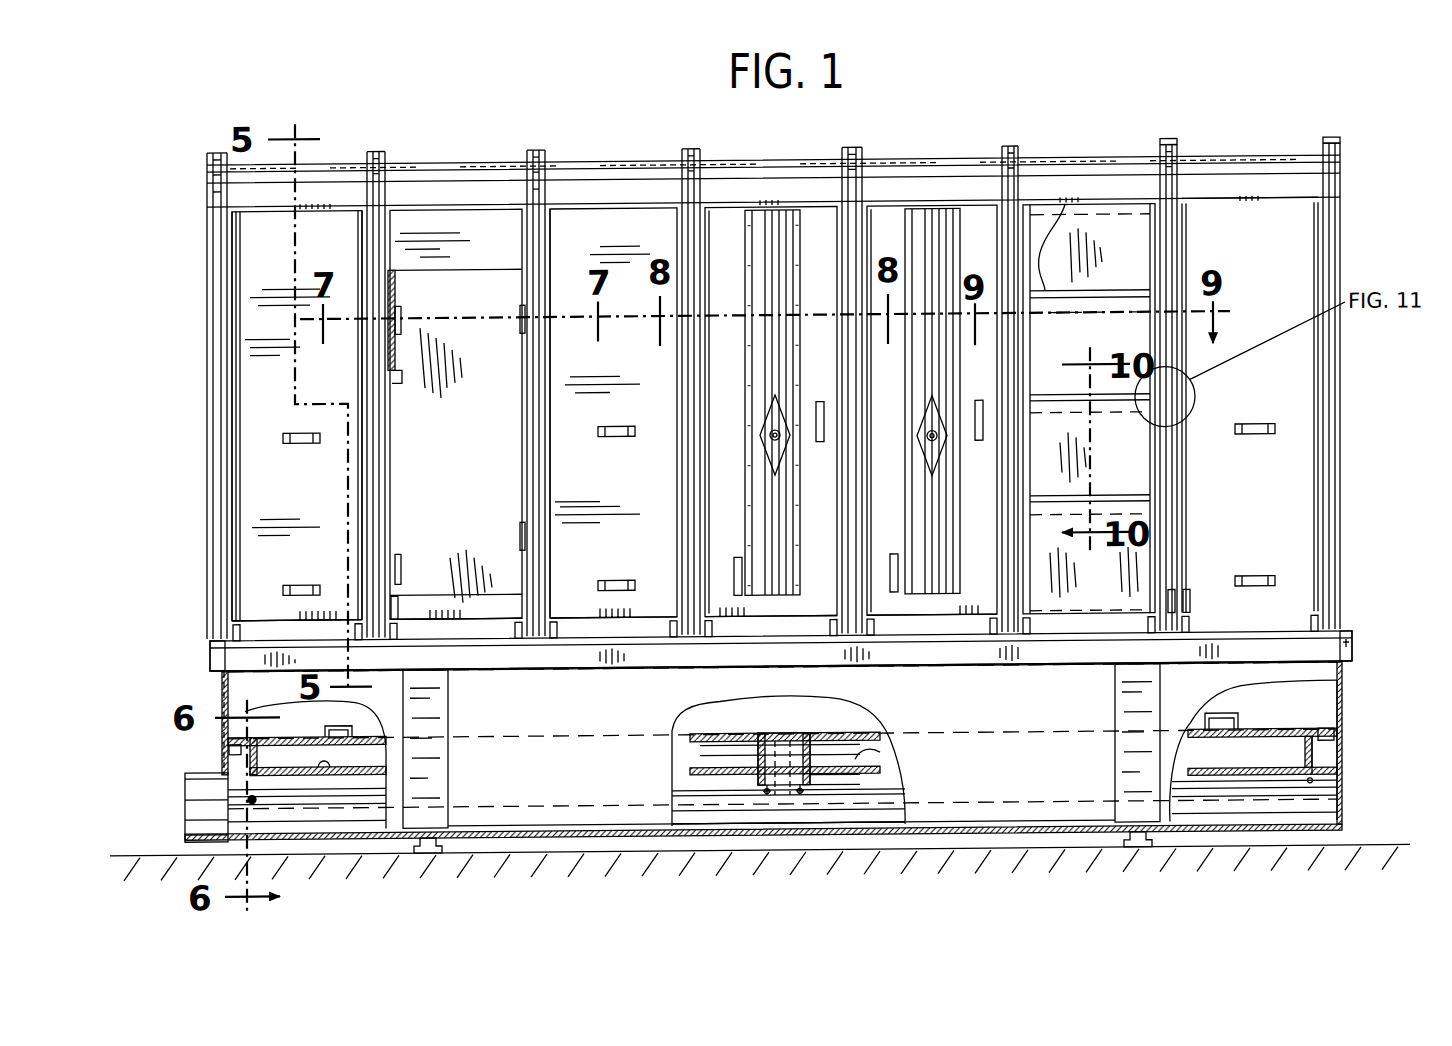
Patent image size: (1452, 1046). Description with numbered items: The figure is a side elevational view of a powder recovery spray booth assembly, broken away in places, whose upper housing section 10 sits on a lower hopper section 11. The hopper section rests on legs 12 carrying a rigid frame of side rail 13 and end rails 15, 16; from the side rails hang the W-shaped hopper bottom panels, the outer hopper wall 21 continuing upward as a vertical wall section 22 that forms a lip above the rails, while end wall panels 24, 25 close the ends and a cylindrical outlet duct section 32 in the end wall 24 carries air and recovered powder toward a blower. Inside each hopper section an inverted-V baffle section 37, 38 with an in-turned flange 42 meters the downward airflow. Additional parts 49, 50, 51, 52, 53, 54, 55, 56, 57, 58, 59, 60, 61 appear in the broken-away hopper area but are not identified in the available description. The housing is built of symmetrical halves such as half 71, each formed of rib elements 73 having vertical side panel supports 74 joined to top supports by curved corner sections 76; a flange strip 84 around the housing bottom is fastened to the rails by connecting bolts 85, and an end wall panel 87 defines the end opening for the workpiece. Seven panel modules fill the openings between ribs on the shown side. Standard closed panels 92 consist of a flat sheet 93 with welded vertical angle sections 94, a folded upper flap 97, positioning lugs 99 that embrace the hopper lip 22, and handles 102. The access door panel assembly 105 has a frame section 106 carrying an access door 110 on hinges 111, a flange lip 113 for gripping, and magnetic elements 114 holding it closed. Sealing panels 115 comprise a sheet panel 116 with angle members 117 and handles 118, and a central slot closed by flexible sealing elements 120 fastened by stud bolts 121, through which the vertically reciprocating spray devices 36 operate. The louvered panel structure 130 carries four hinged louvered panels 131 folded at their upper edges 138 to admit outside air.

The upper section 10 is at (1400, 445).
The lower section 11 is at (1395, 715).
The legs 12 is at (445, 728).
The side rail 13 is at (595, 672).
The end rail 15 is at (215, 658).
The end rail 16 is at (1352, 652).
The outer hopper wall 21 is at (1045, 710).
The vertical wall section 22 is at (642, 638).
The end wall panel 24 is at (222, 692).
The end wall panel 25 is at (1342, 718).
The outlet duct section 32 is at (200, 790).
The reciprocating spray device 36 is at (773, 437).
The baffle section 37 is at (700, 738).
The baffle section 38 is at (862, 735).
The flange section 42 is at (350, 810).
The bracket 49 is at (322, 768).
The channel 50 is at (855, 765).
The bottom plate 51 is at (888, 810).
The handle 52 is at (350, 735).
The strip 53 is at (1314, 768).
The fastener 54 is at (1336, 745).
The plate 55 is at (815, 745).
The hinge block 56 is at (762, 738).
The bolt 57 is at (782, 805).
The pin 58 is at (782, 740).
The bar 59 is at (272, 740).
The bracket 60 is at (240, 764).
The fastener 61 is at (228, 752).
The housing half 71 is at (445, 188).
The rib element 73 is at (545, 190).
The vertical side panel support 74 is at (1342, 548).
The curved upper corner section 76 is at (1170, 160).
The flange strip 84 is at (620, 672).
The connecting bolts 85 is at (865, 648).
The end wall panel 87 is at (342, 212).
The closed wall panel 92 is at (255, 355).
The flat sheet metal section 93 is at (311, 489).
The angle section 94 is at (232, 252).
The flap like section 97 is at (1252, 200).
The positioning lug 99 is at (398, 605).
The handles 102 is at (285, 438).
The access door panel assembly 105 is at (520, 505).
The frame section 106 is at (510, 247).
The access door 110 is at (486, 493).
The hinges 111 is at (520, 325).
The flange lip 113 is at (400, 393).
The magnetic elements 114 is at (398, 320).
The sealing panel 115 is at (738, 215).
The flat sheet metal panel 116 is at (755, 355).
The angle members 117 is at (703, 215).
The handles 118 is at (822, 448).
The flexible sealing elements 120 is at (765, 535).
The stud bolts 121 is at (905, 215).
The louvered panel structure 130 is at (1085, 215).
The louvered panel 131 is at (1140, 274).
The upper edge 138 is at (1048, 258).